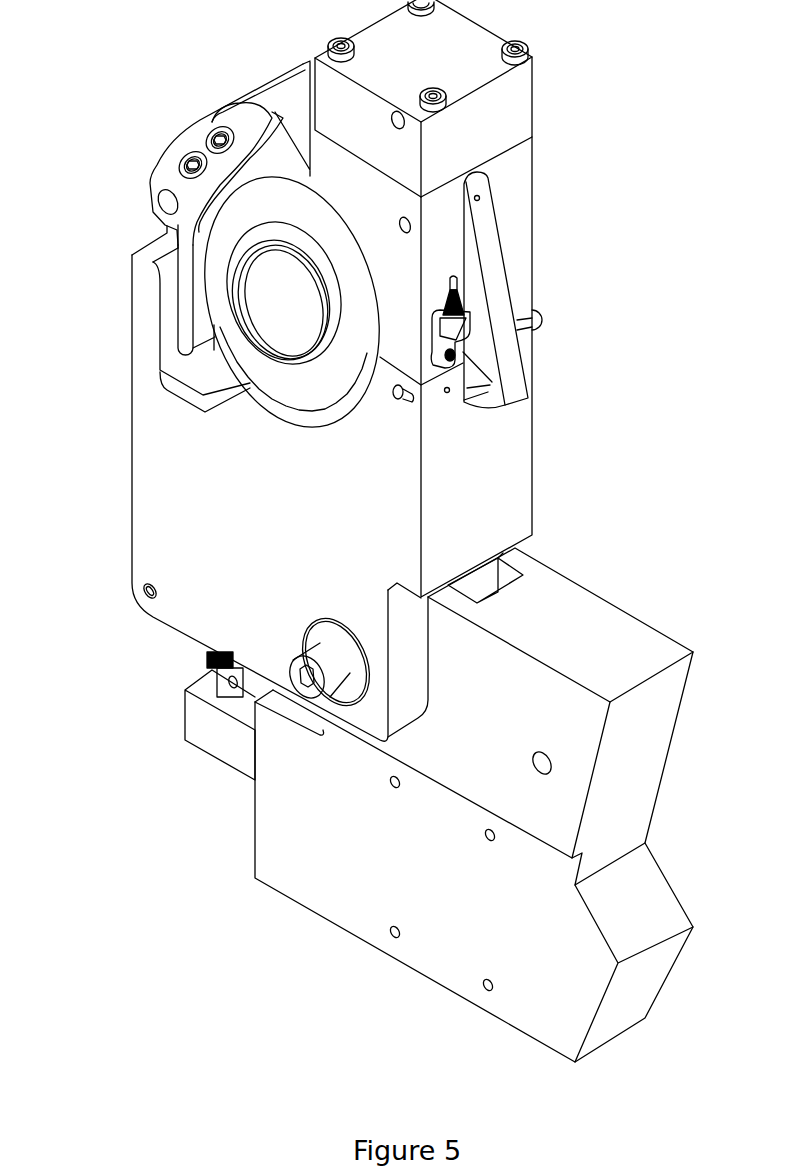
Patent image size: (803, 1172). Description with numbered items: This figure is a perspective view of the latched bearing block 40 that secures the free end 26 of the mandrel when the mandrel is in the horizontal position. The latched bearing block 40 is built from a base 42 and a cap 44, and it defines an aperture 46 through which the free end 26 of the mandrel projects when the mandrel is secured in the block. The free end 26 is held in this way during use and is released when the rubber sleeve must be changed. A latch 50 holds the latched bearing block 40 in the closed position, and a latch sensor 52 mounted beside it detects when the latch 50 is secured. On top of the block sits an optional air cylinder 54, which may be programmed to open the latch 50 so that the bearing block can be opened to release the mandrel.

The latched bearing block 40 is at (145, 779).
The base 42 is at (280, 483).
The cap 44 is at (403, 329).
The aperture 46 is at (227, 209).
The free end 26 is at (292, 302).
The latch 50 is at (513, 365).
The latch sensor 52 is at (462, 350).
The air cylinder 54 is at (423, 98).